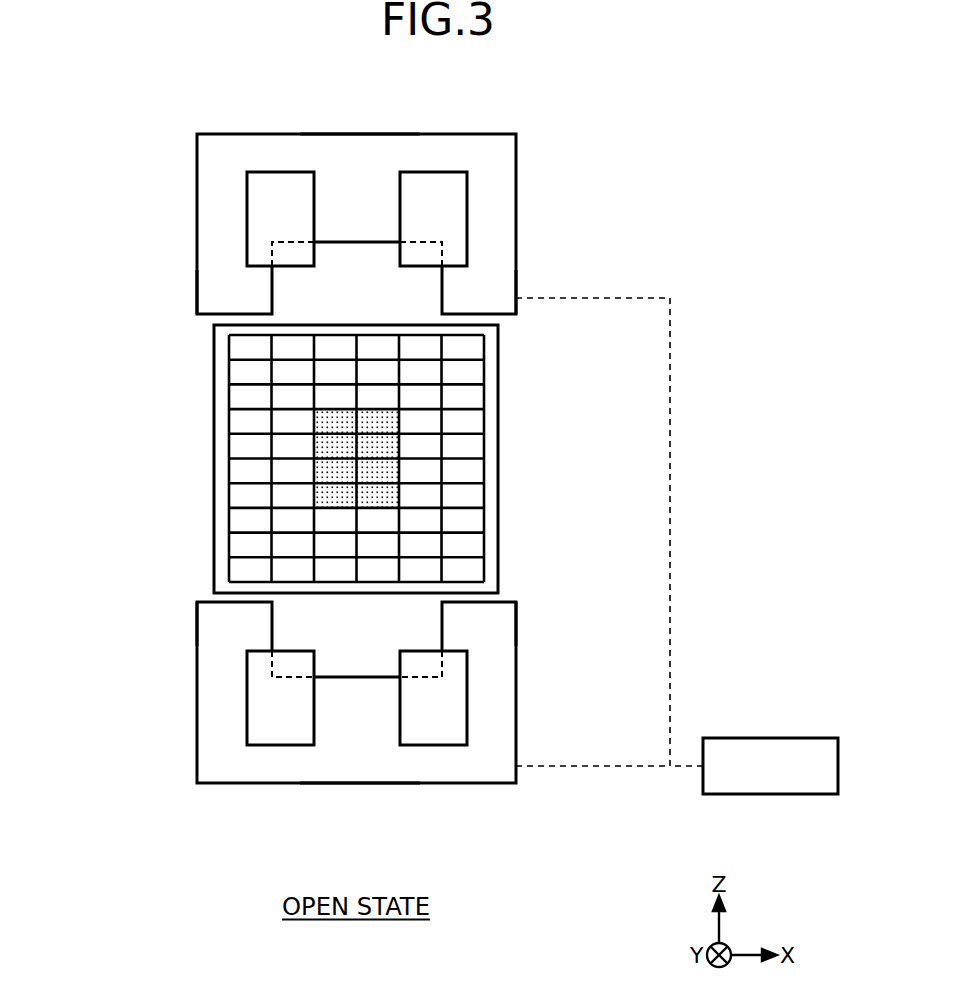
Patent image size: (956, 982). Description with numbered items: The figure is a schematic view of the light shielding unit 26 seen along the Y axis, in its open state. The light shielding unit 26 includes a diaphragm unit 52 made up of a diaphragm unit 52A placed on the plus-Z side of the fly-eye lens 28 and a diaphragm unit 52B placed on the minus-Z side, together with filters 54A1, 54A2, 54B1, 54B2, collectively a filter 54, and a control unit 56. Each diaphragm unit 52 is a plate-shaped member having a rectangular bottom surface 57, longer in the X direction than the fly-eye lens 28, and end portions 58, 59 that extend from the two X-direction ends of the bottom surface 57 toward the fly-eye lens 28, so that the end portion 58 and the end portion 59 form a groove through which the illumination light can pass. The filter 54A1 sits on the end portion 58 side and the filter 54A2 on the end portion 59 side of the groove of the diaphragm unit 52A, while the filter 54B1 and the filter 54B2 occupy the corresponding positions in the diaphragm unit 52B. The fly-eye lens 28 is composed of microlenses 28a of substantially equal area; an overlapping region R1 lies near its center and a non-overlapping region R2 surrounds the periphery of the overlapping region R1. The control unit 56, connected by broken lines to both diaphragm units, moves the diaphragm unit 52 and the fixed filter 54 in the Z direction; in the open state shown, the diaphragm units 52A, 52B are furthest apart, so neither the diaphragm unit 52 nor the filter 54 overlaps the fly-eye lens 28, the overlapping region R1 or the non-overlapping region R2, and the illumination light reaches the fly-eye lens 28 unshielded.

The light shielding unit 26 is at (321, 464).
The diaphragm unit 52 is at (293, 458).
The diaphragm unit 52A is at (213, 212).
The diaphragm unit 52B is at (213, 689).
The filter 54 is at (357, 464).
The filter 54A1 is at (278, 192).
The filter 54A2 is at (432, 192).
The filter 54B1 is at (278, 730).
The filter 54B2 is at (431, 730).
The bottom surface 57 is at (359, 157).
The end portion 58 is at (213, 284).
The end portion 59 is at (490, 287).
The fly-eye lens 28 is at (394, 459).
The microlens 28a is at (478, 447).
The overlapping region R1 is at (403, 493).
The non-overlapping region R2 is at (486, 497).
The control unit 56 is at (757, 738).